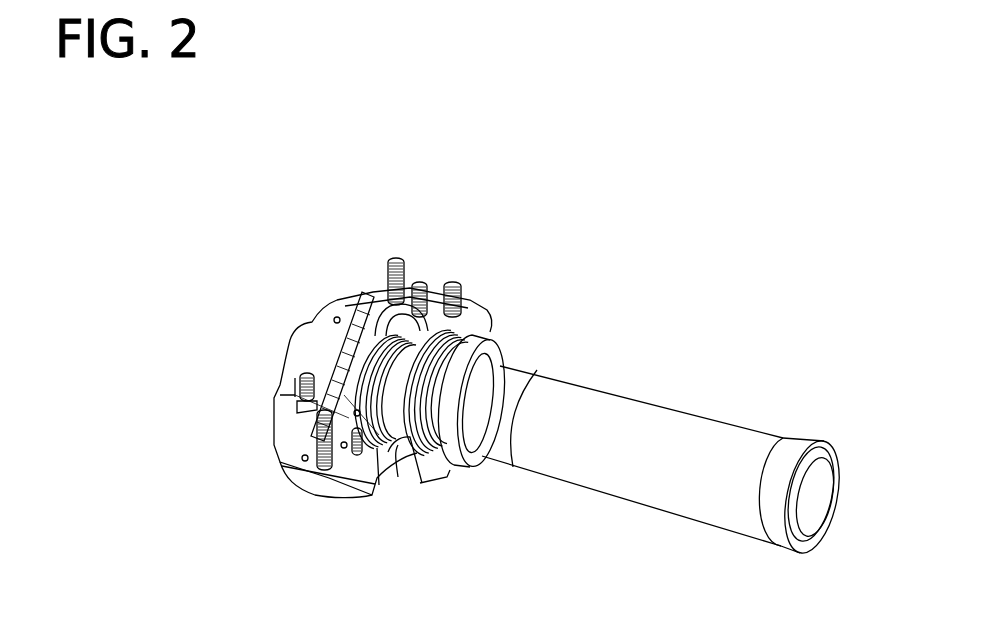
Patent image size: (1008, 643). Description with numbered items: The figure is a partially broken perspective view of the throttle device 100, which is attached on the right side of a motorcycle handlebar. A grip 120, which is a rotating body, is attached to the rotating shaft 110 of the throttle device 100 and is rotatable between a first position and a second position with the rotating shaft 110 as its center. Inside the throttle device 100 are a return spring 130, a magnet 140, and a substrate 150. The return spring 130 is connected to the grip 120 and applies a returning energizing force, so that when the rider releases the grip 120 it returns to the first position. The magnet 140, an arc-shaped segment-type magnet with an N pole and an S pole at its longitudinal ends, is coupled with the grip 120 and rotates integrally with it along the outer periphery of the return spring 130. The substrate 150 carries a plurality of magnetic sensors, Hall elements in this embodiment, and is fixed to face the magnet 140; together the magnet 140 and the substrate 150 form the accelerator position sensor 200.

The throttle device 100 is at (289, 178).
The rotating shaft 110 is at (430, 480).
The grip 120 is at (718, 424).
The return spring 130 is at (378, 478).
The magnet 140 is at (412, 302).
The substrate 150 is at (370, 298).
The accelerator position sensor 200 is at (420, 184).